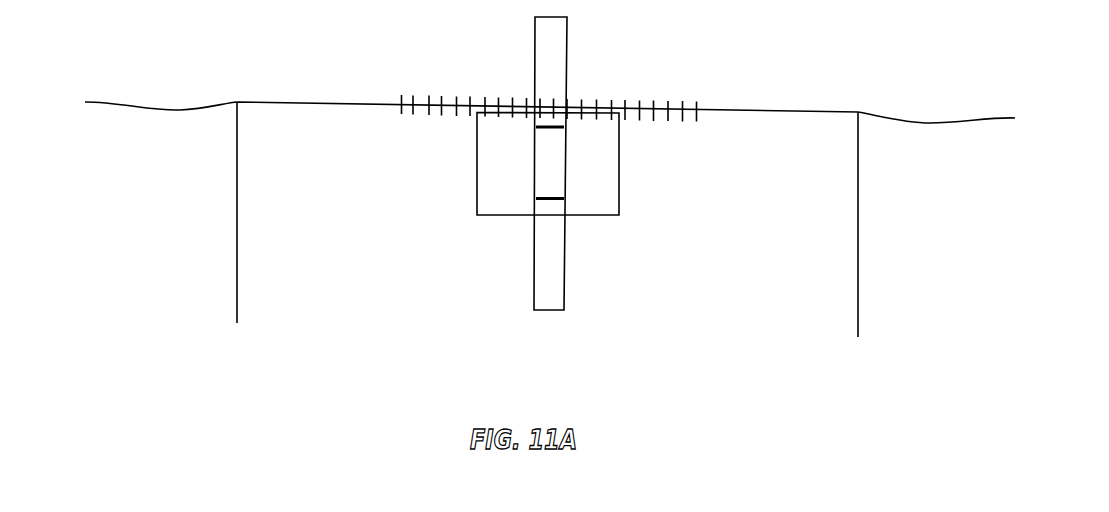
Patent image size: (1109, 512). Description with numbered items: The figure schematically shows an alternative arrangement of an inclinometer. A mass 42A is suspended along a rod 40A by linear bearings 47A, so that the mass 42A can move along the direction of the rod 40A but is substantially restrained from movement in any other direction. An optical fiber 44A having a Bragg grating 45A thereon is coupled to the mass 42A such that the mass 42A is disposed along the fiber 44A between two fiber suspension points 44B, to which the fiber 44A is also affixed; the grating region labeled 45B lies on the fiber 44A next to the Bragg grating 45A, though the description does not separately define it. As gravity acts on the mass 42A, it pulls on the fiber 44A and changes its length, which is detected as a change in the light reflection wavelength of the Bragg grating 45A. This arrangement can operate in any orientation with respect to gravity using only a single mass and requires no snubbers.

The rod 40A is at (568, 42).
The mass 42A is at (477, 162).
The optical fiber 44A is at (318, 100).
The fiber suspension points 44B is at (237, 217).
The Bragg grating 45A is at (669, 100).
The tick marks left 45B is at (429, 92).
The linear bearings 47A is at (565, 128).